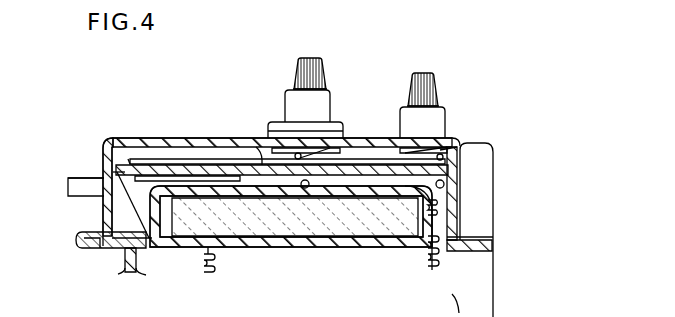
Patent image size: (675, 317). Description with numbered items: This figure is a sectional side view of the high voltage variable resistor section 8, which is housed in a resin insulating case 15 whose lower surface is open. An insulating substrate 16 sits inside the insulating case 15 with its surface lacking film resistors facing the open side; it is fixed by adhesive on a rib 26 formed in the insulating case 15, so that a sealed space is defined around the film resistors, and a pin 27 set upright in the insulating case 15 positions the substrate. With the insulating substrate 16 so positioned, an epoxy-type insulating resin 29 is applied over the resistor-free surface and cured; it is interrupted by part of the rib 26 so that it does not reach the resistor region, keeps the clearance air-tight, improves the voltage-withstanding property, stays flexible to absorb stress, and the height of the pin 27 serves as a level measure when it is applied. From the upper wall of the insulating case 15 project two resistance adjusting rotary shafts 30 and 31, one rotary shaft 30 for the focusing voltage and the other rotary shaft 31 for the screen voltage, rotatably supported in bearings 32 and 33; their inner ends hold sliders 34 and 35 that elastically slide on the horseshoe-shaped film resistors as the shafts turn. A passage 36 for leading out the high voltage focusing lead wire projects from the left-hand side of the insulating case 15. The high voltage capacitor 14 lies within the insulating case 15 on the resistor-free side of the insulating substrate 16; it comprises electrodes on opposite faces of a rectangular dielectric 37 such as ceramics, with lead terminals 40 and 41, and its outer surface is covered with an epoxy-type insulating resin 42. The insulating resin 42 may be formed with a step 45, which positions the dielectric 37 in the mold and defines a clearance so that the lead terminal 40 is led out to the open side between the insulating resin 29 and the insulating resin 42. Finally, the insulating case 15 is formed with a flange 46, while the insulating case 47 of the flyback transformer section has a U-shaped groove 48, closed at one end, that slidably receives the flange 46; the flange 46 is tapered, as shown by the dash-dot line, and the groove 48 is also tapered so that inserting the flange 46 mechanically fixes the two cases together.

The high voltage variable resistor section 8 is at (512, 163).
The high voltage capacitor 14 is at (339, 248).
The insulating case 15 is at (122, 138).
The insulating substrate 16 is at (389, 163).
The rib 26 is at (263, 148).
The pin 27 is at (165, 164).
The insulating resin 29 is at (103, 168).
The rotary shaft 30 is at (321, 76).
The rotary shaft 31 is at (438, 94).
The bearing 32 is at (292, 102).
The bearing 33 is at (441, 123).
The slider 34 is at (300, 158).
The slider 35 is at (455, 150).
The passage 36 is at (70, 190).
The dielectric 37 is at (293, 238).
The lead terminal 40 is at (432, 268).
The lead terminal 41 is at (214, 266).
The insulating resin 42 is at (150, 239).
The step 45 is at (208, 138).
The flange 46 is at (128, 258).
The insulating case 47 is at (80, 240).
The U-shaped groove 48 is at (102, 248).